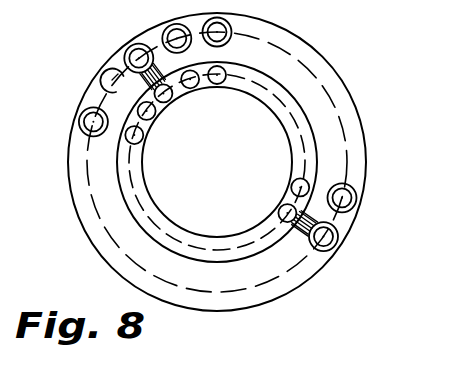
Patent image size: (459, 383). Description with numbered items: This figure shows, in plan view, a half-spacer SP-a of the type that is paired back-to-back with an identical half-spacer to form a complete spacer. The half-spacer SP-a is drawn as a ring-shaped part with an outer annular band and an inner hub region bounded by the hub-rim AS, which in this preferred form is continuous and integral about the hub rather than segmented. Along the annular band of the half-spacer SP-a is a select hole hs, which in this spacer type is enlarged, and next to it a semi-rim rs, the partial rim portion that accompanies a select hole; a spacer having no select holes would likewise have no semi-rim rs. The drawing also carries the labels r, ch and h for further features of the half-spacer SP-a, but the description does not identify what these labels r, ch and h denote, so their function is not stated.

The half-spacer SP-a is at (308, 43).
The hub-rim AS is at (277, 212).
The roller r is at (82, 131).
The semi-rim rs is at (101, 91).
The channel balls ch is at (190, 95).
The select hole hs is at (123, 58).
The hatched slot h is at (324, 237).